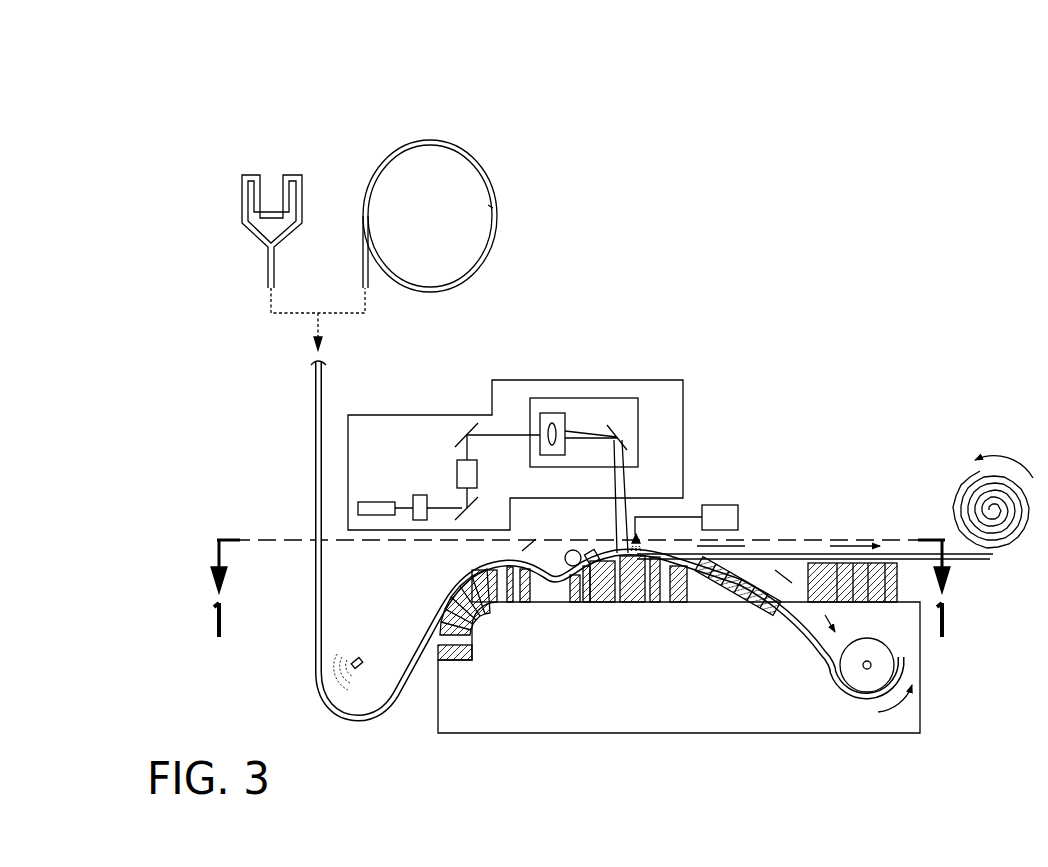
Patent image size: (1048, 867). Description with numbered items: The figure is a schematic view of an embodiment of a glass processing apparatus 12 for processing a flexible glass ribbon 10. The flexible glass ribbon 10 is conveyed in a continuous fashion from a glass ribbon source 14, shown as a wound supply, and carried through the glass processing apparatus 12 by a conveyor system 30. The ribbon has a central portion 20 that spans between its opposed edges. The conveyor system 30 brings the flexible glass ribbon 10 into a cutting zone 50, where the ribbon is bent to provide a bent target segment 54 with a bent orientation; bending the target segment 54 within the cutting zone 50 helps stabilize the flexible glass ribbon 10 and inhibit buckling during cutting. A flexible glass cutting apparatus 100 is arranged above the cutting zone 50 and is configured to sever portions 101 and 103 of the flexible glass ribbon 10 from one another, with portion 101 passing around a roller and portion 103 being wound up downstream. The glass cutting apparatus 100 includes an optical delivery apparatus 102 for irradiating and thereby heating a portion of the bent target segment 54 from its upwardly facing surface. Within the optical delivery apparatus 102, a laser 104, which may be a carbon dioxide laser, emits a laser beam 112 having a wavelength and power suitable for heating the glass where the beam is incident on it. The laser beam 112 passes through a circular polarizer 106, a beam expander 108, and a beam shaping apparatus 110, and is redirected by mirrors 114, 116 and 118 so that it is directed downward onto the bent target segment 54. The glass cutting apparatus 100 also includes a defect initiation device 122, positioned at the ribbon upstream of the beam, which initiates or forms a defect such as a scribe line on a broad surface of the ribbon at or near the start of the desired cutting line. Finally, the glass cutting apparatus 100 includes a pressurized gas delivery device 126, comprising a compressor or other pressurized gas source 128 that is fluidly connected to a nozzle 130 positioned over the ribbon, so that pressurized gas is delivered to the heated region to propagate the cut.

The flexible glass ribbon 10 is at (547, 570).
The glass processing apparatus 12 is at (818, 293).
The glass ribbon source 14 is at (431, 122).
The central portion 20 is at (775, 555).
The conveyor system 30 is at (530, 627).
The cutting zone 50 is at (679, 644).
The bent target segment 54 is at (597, 553).
The flexible glass cutting apparatus 100 is at (625, 370).
The portion of the flexible glass ribbon 101 is at (822, 633).
The optical delivery apparatus 102 is at (690, 448).
The portion of the flexible glass ribbon 103 is at (806, 555).
The laser 104 is at (367, 500).
The circular polarizer 106 is at (420, 494).
The beam expander 108 is at (478, 470).
The beam shaping apparatus 110 is at (552, 410).
The laser beam 112 is at (402, 507).
The mirror 114 is at (470, 522).
The mirror 116 is at (472, 424).
The mirror 118 is at (621, 436).
The defect initiation device 122 is at (565, 553).
The pressurized gas delivery device 126 is at (730, 495).
The pressurized gas source 128 is at (722, 505).
The nozzle 130 is at (655, 553).